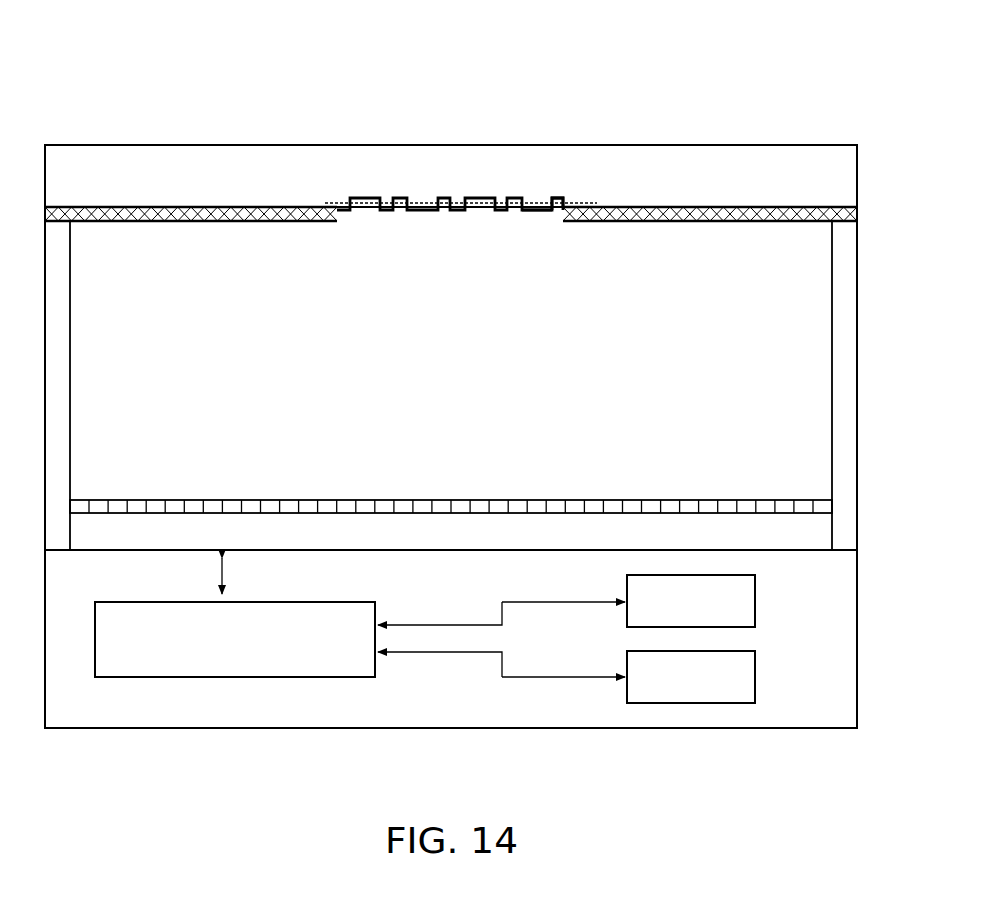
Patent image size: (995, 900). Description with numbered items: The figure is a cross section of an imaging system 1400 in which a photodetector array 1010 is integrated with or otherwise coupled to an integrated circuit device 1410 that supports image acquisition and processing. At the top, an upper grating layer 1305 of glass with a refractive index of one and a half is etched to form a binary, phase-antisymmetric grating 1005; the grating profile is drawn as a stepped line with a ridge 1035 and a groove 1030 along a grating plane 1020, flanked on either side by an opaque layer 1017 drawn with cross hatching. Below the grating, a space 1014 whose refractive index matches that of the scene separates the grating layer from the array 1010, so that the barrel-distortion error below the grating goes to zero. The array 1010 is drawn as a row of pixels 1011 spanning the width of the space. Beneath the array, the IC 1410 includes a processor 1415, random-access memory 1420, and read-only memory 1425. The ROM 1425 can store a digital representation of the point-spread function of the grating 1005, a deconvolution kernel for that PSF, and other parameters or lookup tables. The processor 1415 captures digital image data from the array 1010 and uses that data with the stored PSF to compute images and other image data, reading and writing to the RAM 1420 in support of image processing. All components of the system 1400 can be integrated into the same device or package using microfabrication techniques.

The imaging system 1400 is at (146, 41).
The upper grating layer 1305 is at (150, 181).
The opaque layer 1017 is at (172, 225).
The phase-antisymmetric grating 1005 is at (374, 238).
The grating plane 1020 is at (337, 206).
The grating ridge 1035 is at (557, 197).
The grating groove 1030 is at (538, 211).
The space 1014 is at (235, 360).
The pixel 1011 is at (210, 498).
The array 1010 is at (548, 550).
The integrated circuit device 1410 is at (480, 701).
The processor 1415 is at (295, 649).
The random-access memory 1420 is at (732, 611).
The read-only memory 1425 is at (732, 687).